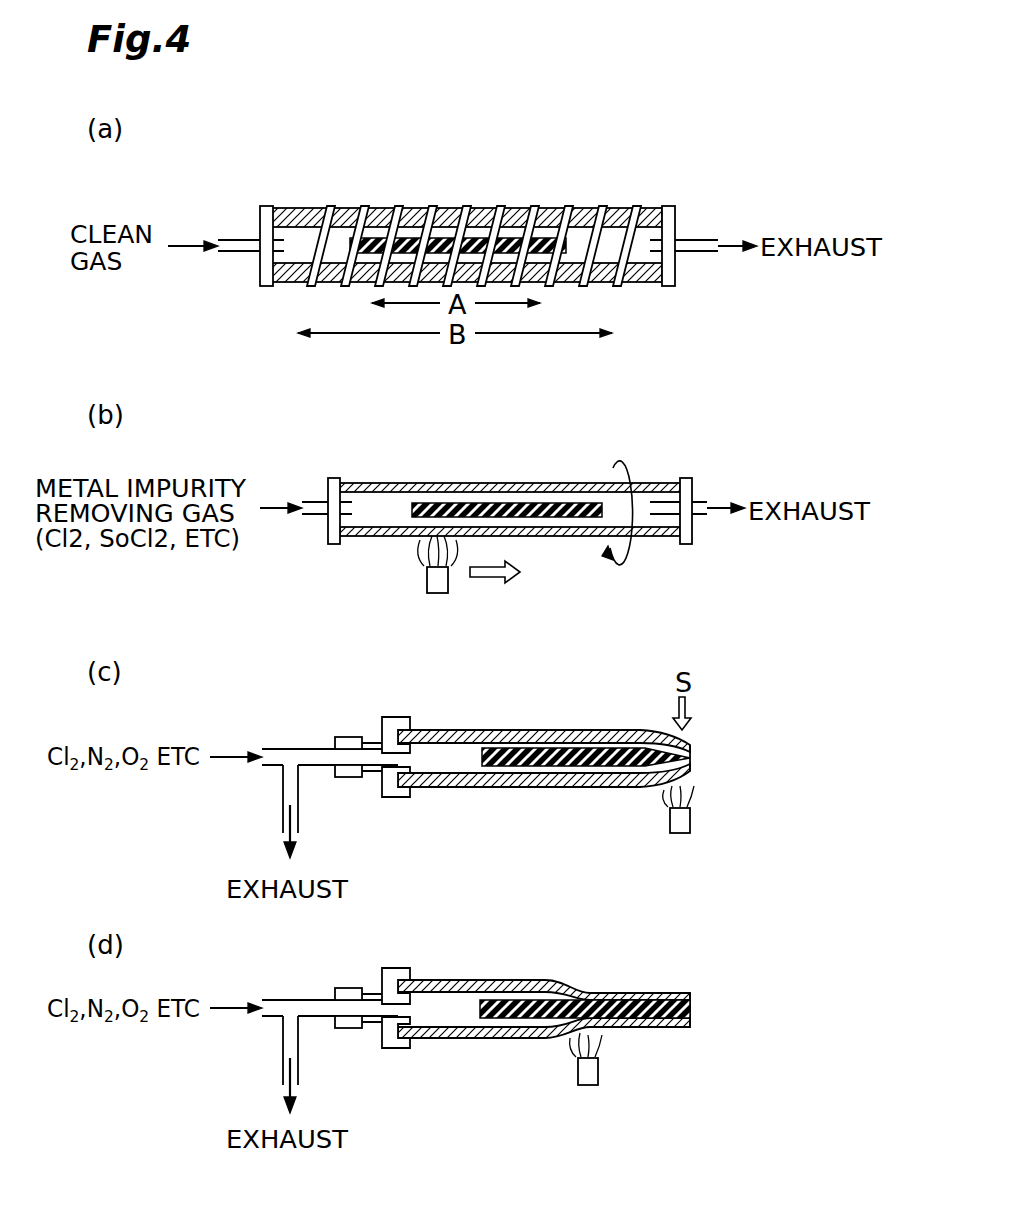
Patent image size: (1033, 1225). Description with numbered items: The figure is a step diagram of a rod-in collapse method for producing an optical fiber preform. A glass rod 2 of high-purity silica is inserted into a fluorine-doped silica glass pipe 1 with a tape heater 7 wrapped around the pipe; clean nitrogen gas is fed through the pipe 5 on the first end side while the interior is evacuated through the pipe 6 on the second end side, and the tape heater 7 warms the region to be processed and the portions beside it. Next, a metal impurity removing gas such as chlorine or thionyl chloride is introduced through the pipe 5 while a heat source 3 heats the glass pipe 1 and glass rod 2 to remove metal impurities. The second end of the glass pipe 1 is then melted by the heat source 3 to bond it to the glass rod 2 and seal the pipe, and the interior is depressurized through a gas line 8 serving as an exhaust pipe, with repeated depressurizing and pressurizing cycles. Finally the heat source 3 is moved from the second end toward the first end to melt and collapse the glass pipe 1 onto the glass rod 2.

The glass pipe 1 is at (380, 208).
The glass rod 2 is at (480, 210).
The heat source 3 is at (427, 581).
The pipe 5 is at (240, 240).
The pipe 6 is at (702, 240).
The tape heater 7 is at (330, 207).
The gas line 8 is at (300, 815).